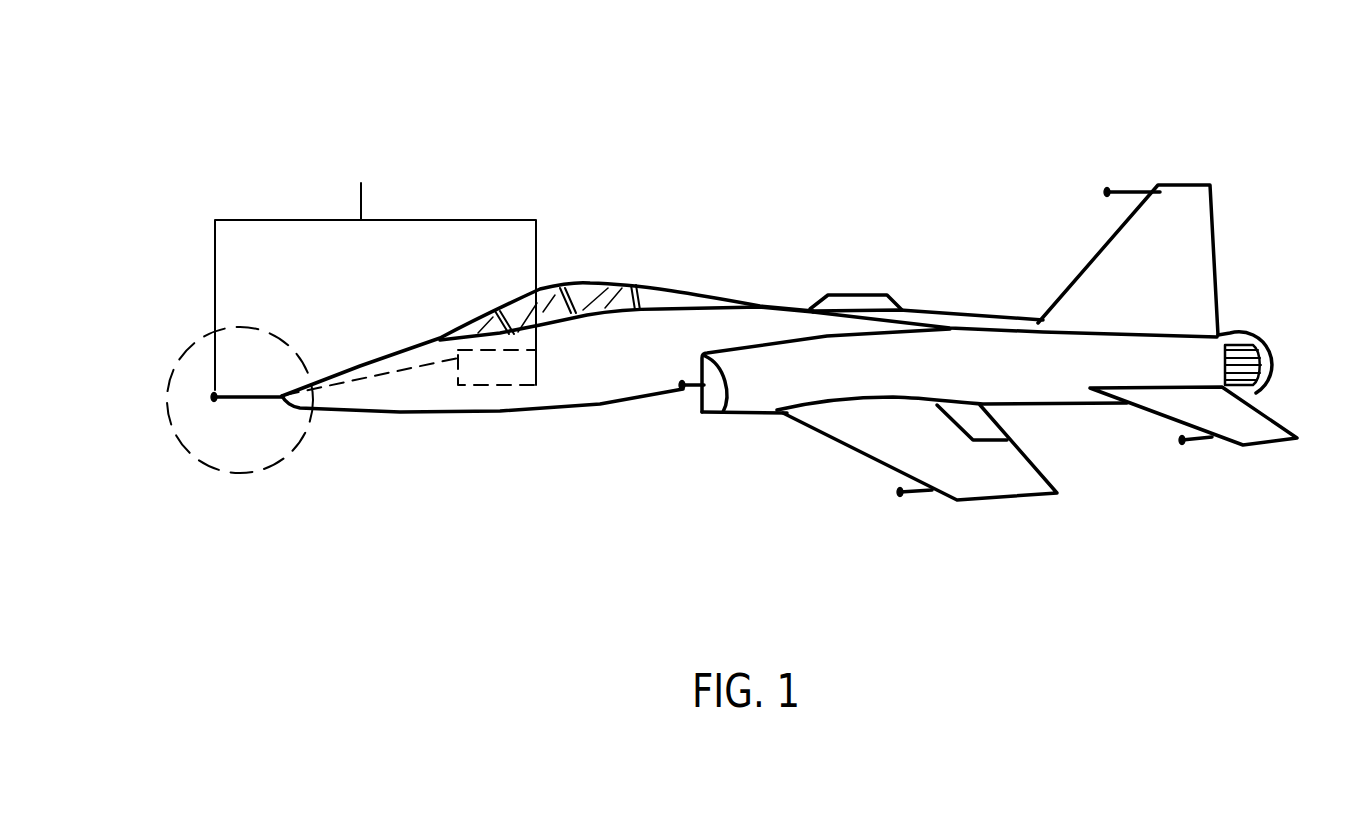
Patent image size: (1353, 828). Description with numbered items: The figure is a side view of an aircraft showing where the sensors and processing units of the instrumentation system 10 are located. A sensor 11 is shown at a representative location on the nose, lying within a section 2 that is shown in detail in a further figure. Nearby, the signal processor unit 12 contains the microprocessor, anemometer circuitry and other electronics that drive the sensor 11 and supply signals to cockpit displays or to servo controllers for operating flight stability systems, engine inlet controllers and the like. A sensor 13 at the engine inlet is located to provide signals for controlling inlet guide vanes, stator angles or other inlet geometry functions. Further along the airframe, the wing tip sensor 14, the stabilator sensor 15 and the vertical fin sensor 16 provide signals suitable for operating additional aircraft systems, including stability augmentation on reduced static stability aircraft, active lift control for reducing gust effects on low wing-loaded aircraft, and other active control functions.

The instrumentation system 10 is at (756, 285).
The sensor 11 is at (283, 489).
The section 2 is at (267, 417).
The signal processor unit 12 is at (410, 418).
The sensor 13 is at (664, 448).
The wing tip sensor 14 is at (902, 523).
The stabilator sensor 15 is at (1173, 490).
The vertical fin sensor 16 is at (1173, 121).